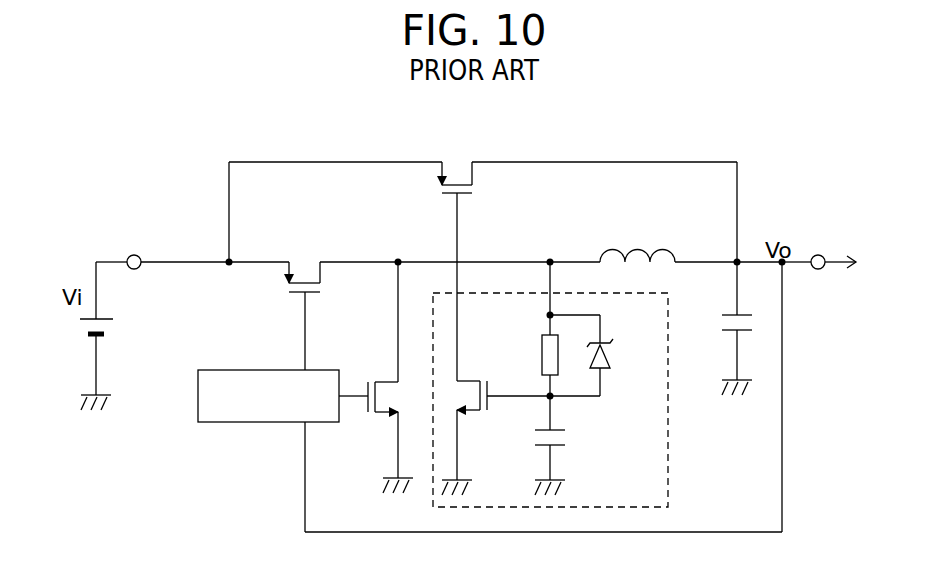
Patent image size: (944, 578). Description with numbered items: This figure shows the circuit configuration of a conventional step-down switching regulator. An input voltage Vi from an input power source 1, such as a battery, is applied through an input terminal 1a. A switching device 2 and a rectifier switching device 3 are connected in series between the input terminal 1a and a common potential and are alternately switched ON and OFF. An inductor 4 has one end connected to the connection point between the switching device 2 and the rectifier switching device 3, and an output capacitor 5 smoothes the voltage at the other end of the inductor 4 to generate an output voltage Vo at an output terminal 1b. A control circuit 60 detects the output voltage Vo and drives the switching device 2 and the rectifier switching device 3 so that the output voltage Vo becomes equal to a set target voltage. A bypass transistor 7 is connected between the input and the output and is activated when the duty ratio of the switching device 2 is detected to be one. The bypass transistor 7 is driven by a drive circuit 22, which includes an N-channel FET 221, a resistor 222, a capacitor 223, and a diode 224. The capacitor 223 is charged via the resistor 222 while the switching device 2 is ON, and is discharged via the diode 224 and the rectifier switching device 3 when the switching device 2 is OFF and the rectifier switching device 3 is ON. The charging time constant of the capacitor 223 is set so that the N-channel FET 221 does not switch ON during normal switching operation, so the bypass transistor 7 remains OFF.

The input power source 1 is at (88, 336).
The input terminal 1a is at (134, 255).
The output terminal 1b is at (818, 270).
The switching device 2 is at (314, 276).
The rectifier switching device 3 is at (368, 409).
The inductor 4 is at (640, 246).
The output capacitor 5 is at (725, 331).
The bypass transistor 7 is at (462, 176).
The drive circuit 22 is at (668, 458).
The control circuit 60 is at (198, 395).
The N-channel FET 221 is at (492, 408).
The resistor 222 is at (540, 352).
The capacitor 223 is at (560, 427).
The diode 224 is at (606, 363).